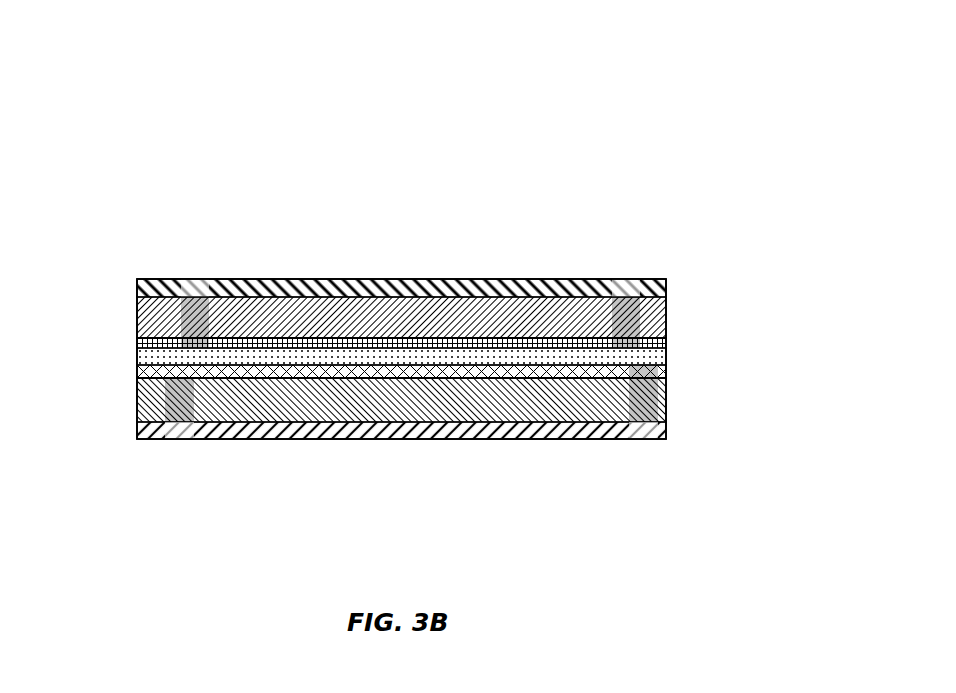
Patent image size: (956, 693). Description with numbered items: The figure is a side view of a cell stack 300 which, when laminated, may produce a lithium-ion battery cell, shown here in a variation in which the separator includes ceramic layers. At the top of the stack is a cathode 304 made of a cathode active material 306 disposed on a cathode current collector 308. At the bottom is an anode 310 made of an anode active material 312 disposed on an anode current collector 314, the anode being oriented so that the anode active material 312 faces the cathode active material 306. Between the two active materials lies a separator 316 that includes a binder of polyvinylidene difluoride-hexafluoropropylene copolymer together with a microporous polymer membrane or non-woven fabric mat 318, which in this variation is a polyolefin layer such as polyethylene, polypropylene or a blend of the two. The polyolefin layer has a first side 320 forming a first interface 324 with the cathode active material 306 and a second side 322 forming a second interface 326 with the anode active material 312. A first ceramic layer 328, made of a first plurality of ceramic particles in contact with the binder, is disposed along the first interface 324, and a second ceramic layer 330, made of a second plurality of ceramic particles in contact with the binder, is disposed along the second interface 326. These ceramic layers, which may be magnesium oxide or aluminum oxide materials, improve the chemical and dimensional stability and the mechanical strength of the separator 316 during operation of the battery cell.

The cell stack 300 is at (699, 193).
The cathode 304 is at (128, 279).
The cathode active material 306 is at (552, 300).
The cathode current collector 308 is at (415, 279).
The anode 310 is at (128, 380).
The anode active material 312 is at (310, 407).
The anode current collector 314 is at (424, 440).
The separator 316 is at (128, 339).
The microporous polymer membrane or non-woven fabric mat 318 is at (666, 359).
The first side 320 is at (620, 350).
The second side 322 is at (650, 358).
The first interface 324 is at (195, 338).
The second interface 326 is at (181, 378).
The first ceramic layer 328 is at (666, 344).
The second ceramic layer 330 is at (666, 372).